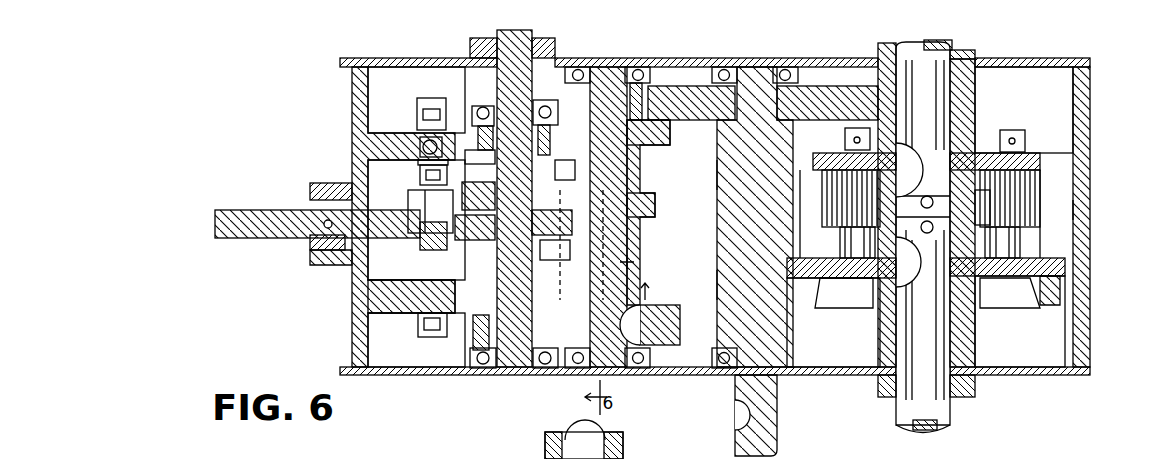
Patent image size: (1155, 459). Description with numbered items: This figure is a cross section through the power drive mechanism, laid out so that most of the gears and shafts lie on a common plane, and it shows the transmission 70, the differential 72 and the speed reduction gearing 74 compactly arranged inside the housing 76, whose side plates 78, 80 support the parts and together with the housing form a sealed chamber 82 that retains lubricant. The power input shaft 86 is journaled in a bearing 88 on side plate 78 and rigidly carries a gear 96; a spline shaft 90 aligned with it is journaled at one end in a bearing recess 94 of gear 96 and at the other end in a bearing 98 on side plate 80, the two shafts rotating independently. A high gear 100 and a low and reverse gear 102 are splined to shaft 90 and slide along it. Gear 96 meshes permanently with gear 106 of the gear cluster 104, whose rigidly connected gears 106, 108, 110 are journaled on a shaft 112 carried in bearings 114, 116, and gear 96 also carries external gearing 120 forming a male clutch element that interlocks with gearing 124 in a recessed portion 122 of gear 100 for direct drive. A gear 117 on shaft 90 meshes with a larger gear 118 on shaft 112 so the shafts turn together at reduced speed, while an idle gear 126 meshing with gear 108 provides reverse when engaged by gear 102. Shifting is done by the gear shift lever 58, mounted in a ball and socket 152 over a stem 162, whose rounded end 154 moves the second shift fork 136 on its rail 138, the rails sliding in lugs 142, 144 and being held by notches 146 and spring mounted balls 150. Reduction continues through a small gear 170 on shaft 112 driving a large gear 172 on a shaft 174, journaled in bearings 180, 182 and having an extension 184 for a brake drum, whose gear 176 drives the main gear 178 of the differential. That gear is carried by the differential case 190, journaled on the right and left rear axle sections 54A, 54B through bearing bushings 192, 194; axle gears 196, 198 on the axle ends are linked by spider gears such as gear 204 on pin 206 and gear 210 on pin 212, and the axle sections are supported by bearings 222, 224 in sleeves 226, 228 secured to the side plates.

The right rear axle section 54A is at (948, 99).
The left rear axle section 54B is at (952, 409).
The gear shift lever 58 is at (280, 240).
The transmission 70 is at (502, 378).
The differential 72 is at (1112, 218).
The speed reduction gearing 74 is at (712, 250).
The housing 76 is at (1080, 126).
The side plate 78 is at (812, 64).
The side plate 80 is at (830, 378).
The sealed chamber 82 is at (1062, 168).
The power input shaft 86 is at (470, 48).
The bearing 88 is at (550, 45).
The spline shaft 90 is at (512, 293).
The bearing recess 94 is at (478, 127).
The gear 96 is at (479, 139).
The bearing 98 is at (540, 370).
The high gear 100 is at (490, 206).
The low and reverse gear 102 is at (488, 236).
The gear cluster 104 is at (642, 241).
The gear 106 is at (672, 145).
The gear 108 is at (656, 211).
The gear 110 is at (658, 295).
The shaft 112 is at (636, 262).
The bearing 114 is at (634, 66).
The bearing 116 is at (634, 368).
The gear 117 is at (478, 334).
The gear 118 is at (668, 328).
The external gearing 120 is at (493, 156).
The recessed portion 122 is at (550, 127).
The gearing 124 is at (563, 165).
The idle gear 126 is at (552, 254).
The second shift fork 136 is at (408, 197).
The rail 138 is at (418, 326).
The lug 142 is at (412, 290).
The lug 144 is at (412, 141).
The notches 146 is at (417, 114).
The spring mounted balls 150 is at (418, 166).
The ball and socket 152 is at (328, 186).
The rounded end 154 is at (420, 246).
The stem 162 is at (326, 266).
The small gear 170 is at (642, 100).
The large gear 172 is at (670, 121).
The shaft 174 is at (718, 177).
The gear 176 is at (716, 284).
The main gear 178 is at (1040, 310).
The bearing 180 is at (718, 66).
The bearing 182 is at (722, 370).
The extension 184 is at (780, 436).
The differential case 190 is at (1030, 152).
The bearing bushing 192 is at (966, 116).
The bearing bushing 194 is at (888, 331).
The axle gear 196 is at (971, 207).
The axle gear 198 is at (861, 214).
The spider gear 204 is at (1030, 228).
The pin 206 is at (1008, 140).
The spider gear 210 is at (834, 160).
The pin 212 is at (846, 136).
The bearing 222 is at (956, 45).
The bearing 224 is at (895, 398).
The sleeve 226 is at (968, 56).
The sleeve 228 is at (977, 385).